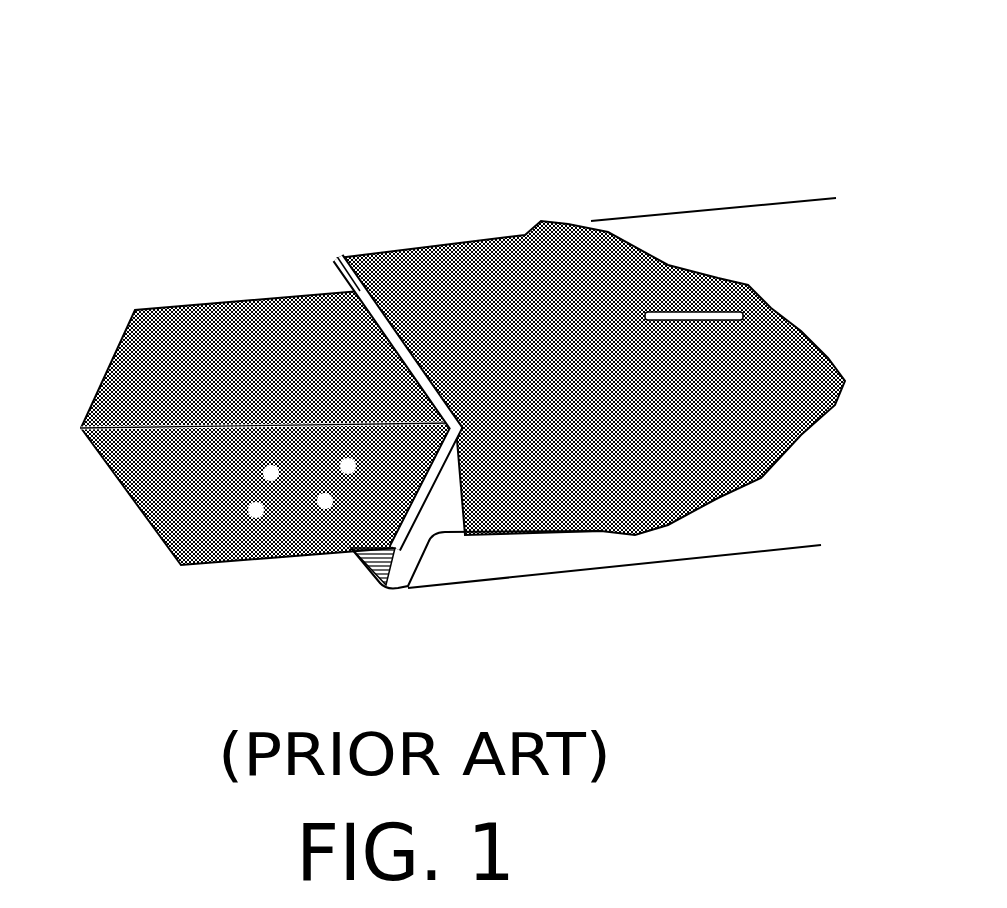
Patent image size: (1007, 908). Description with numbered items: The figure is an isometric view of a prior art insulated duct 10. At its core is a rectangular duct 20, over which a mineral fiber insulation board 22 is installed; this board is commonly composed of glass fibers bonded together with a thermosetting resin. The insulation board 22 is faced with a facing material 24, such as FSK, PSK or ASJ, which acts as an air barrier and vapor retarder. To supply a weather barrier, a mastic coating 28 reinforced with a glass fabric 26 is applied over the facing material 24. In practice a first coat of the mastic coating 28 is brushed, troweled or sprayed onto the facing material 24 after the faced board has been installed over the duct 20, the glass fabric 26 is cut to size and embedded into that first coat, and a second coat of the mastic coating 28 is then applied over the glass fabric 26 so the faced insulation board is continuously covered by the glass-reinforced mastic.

The insulated duct 10 is at (115, 43).
The rectangular duct 20 is at (177, 295).
The mineral fiber insulation board 22 is at (320, 270).
The facing material 24 is at (347, 247).
The glass fabric 26 is at (528, 222).
The mastic coating 28 is at (487, 547).